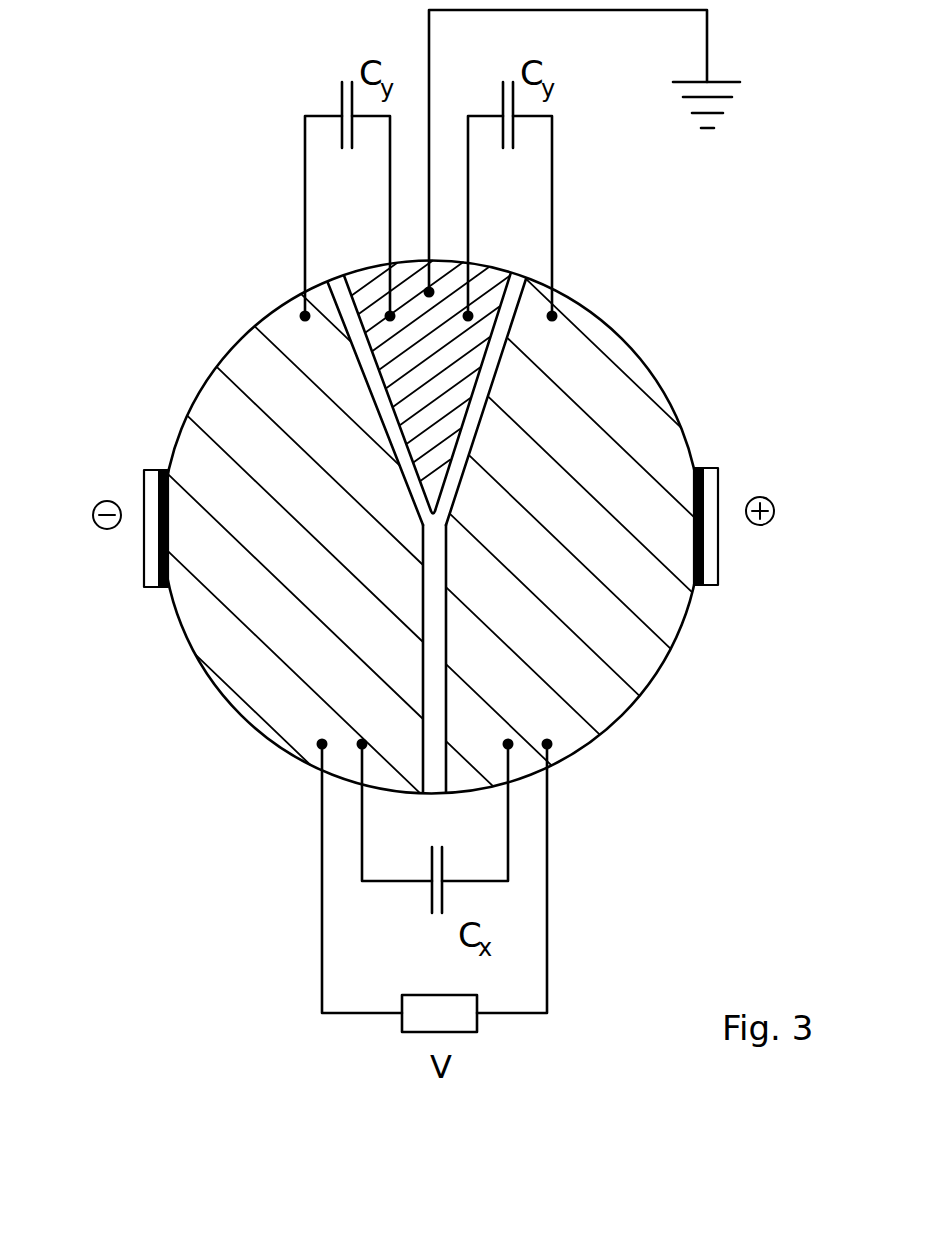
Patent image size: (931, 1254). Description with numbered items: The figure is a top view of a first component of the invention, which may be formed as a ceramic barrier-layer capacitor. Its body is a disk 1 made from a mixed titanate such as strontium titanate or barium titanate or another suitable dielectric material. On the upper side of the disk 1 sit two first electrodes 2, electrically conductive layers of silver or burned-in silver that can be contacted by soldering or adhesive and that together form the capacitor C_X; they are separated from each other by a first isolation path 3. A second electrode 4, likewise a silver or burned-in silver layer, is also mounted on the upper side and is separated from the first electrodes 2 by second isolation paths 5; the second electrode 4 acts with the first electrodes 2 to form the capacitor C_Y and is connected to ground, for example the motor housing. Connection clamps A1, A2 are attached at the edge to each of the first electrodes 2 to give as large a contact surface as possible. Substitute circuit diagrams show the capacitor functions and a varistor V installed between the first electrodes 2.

The disk 1 is at (435, 738).
The first electrodes 2 is at (235, 378).
The first isolation path 3 is at (437, 647).
The second electrode 4 is at (476, 353).
The second isolation paths 5 is at (356, 344).
The connection clamp A1 is at (705, 498).
The connection clamp A2 is at (150, 500).